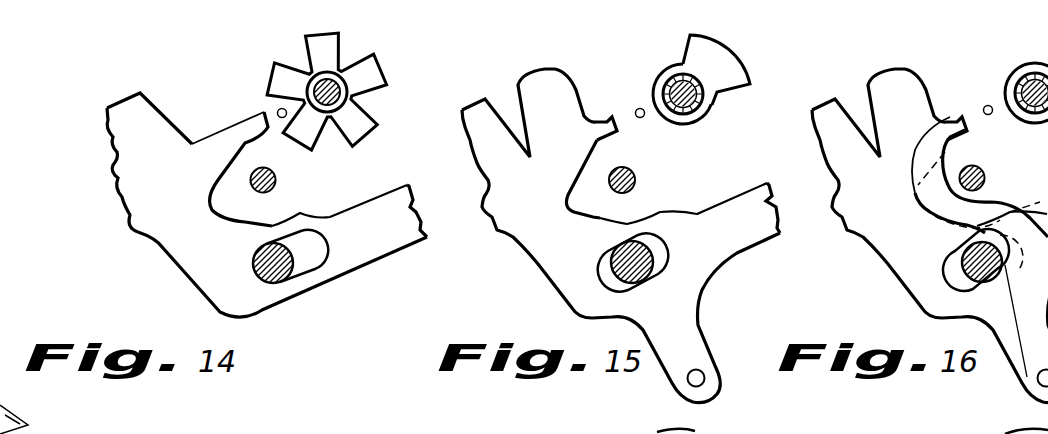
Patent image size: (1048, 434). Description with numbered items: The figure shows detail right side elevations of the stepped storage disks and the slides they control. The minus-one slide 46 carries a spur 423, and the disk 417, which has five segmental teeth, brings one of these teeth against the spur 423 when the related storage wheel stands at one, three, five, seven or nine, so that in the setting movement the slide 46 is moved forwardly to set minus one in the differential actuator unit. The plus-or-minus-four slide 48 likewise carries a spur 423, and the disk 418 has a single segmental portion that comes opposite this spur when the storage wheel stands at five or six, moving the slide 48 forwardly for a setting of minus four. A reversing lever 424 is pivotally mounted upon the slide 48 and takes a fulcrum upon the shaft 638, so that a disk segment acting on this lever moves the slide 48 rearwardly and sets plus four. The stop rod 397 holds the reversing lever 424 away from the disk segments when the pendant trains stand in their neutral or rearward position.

In FIG. 14, the slide 46 is at (193, 272).
In FIG. 15, the slide 48 is at (548, 253).
In FIG. 16, the slide 48 is at (910, 275).
In FIG. 14, the disk 417 is at (390, 82).
In FIG. 15, the disk 418 is at (725, 56).
In FIG. 14, the spur 423 is at (246, 124).
In FIG. 15, the spur 423 is at (598, 122).
In FIG. 16, the reversing lever 424 is at (948, 118).
In FIG. 16, the stop rod 397 is at (985, 178).
In FIG. 16, the shaft 638 is at (970, 262).